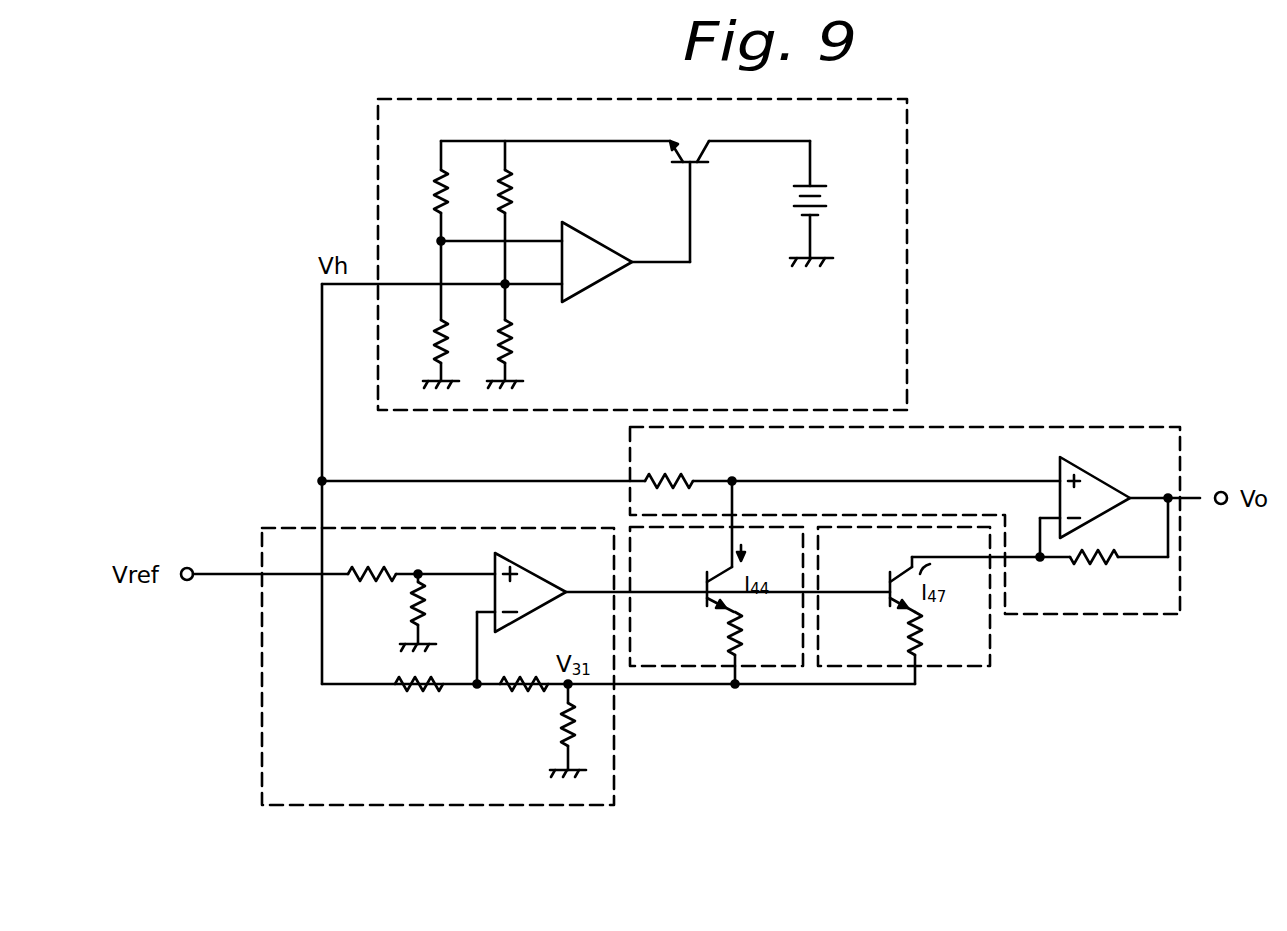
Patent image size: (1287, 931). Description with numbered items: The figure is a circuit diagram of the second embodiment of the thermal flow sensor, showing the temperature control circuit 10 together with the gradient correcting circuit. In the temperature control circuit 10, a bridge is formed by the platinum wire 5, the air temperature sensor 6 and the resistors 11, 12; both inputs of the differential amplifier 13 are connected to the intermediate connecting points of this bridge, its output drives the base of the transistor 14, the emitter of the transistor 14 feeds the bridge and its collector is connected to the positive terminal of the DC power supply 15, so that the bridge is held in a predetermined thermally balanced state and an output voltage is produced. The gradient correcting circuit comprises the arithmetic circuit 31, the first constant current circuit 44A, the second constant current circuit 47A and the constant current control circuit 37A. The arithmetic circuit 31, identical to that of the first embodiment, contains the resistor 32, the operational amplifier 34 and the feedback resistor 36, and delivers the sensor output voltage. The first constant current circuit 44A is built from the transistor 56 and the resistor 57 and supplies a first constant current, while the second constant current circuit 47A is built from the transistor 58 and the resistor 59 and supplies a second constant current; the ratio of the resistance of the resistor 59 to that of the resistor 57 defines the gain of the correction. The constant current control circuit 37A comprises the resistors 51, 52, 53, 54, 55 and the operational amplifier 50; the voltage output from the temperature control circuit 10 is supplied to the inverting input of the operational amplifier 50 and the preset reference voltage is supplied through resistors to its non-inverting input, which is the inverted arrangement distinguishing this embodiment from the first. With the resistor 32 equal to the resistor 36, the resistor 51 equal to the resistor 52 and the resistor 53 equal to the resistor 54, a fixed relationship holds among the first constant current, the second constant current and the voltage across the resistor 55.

The temperature control circuit 10 is at (636, 80).
The platinum wire 5 is at (509, 178).
The air temperature sensor 6 is at (445, 178).
The resistor 11 is at (445, 326).
The resistor 12 is at (509, 326).
The differential amplifier 13 is at (608, 285).
The transistor 14 is at (678, 165).
The DC power supply 15 is at (826, 197).
The arithmetic circuit 31 is at (953, 423).
The resistor 32 is at (668, 485).
The operational amplifier 34 is at (1096, 472).
The resistor 36 is at (1102, 550).
The constant current control circuit 37A is at (686, 783).
The first constant current circuit 44A is at (793, 668).
The second constant current circuit 47A is at (975, 668).
The operational amplifier 50 is at (532, 570).
The resistor 51 is at (350, 580).
The resistor 52 is at (424, 602).
The resistor 53 is at (430, 670).
The resistor 54 is at (516, 678).
The resistor 55 is at (576, 730).
The transistor 56 is at (705, 580).
The resistor 57 is at (728, 634).
The transistor 58 is at (888, 577).
The resistor 59 is at (910, 634).